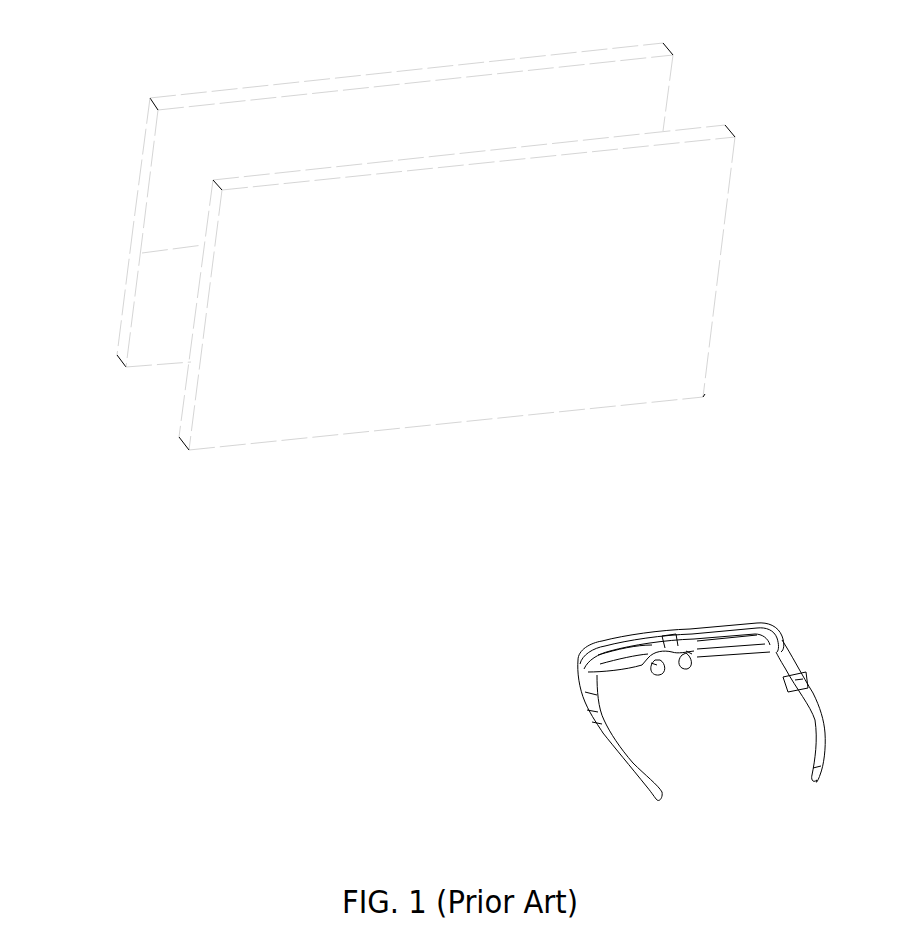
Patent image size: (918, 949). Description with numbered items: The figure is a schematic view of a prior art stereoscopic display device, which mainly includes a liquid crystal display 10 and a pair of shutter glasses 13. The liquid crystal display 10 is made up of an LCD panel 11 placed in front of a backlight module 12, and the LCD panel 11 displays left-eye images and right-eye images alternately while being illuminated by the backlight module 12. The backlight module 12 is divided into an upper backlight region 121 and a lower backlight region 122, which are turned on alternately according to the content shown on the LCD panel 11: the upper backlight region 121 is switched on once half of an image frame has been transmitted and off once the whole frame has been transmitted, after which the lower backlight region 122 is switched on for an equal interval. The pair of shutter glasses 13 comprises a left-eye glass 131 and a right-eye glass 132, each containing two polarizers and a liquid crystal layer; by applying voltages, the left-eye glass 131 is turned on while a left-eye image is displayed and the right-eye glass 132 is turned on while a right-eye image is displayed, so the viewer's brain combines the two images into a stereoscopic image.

The liquid crystal display 10 is at (456, 232).
The LCD panel 11 is at (489, 275).
The backlight module 12 is at (424, 190).
The upper backlight region 121 is at (157, 173).
The lower backlight region 122 is at (148, 300).
The pair of shutter glasses 13 is at (681, 687).
The left-eye glass 131 is at (616, 640).
The right-eye glass 132 is at (703, 628).